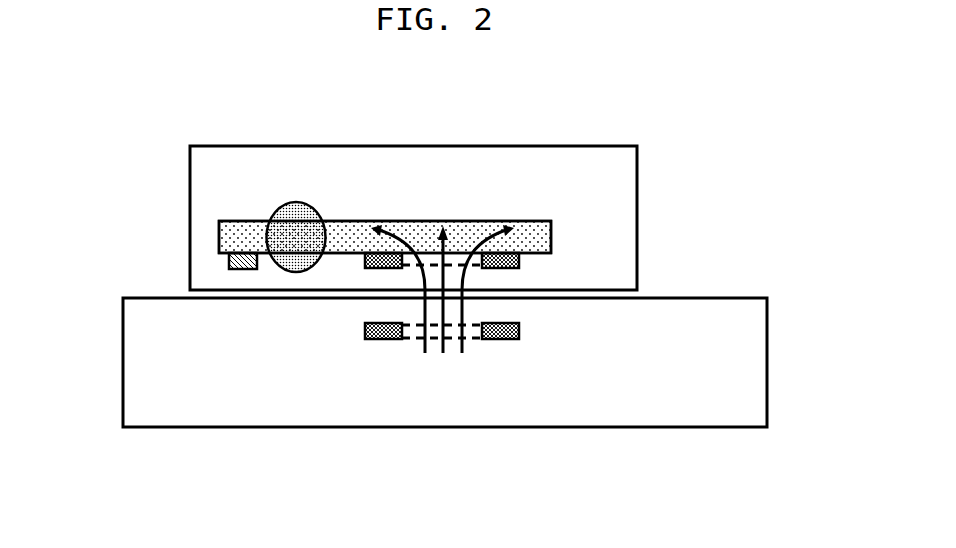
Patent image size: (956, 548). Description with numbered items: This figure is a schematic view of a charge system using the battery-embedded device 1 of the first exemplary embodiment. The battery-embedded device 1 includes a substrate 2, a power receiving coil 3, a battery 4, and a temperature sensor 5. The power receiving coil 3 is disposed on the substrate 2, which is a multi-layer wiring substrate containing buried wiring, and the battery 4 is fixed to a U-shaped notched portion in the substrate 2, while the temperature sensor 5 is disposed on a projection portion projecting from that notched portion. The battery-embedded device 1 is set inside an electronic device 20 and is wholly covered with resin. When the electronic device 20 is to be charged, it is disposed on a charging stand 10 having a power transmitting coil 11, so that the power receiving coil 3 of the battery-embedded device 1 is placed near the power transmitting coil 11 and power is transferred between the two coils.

The battery-embedded device 1 is at (402, 188).
The substrate 2 is at (235, 235).
The power receiving coil 3 is at (522, 262).
The battery 4 is at (285, 198).
The temperature sensor 5 is at (226, 264).
The charging stand 10 is at (715, 297).
The power transmitting coil 11 is at (385, 342).
The electronic device 20 is at (570, 143).